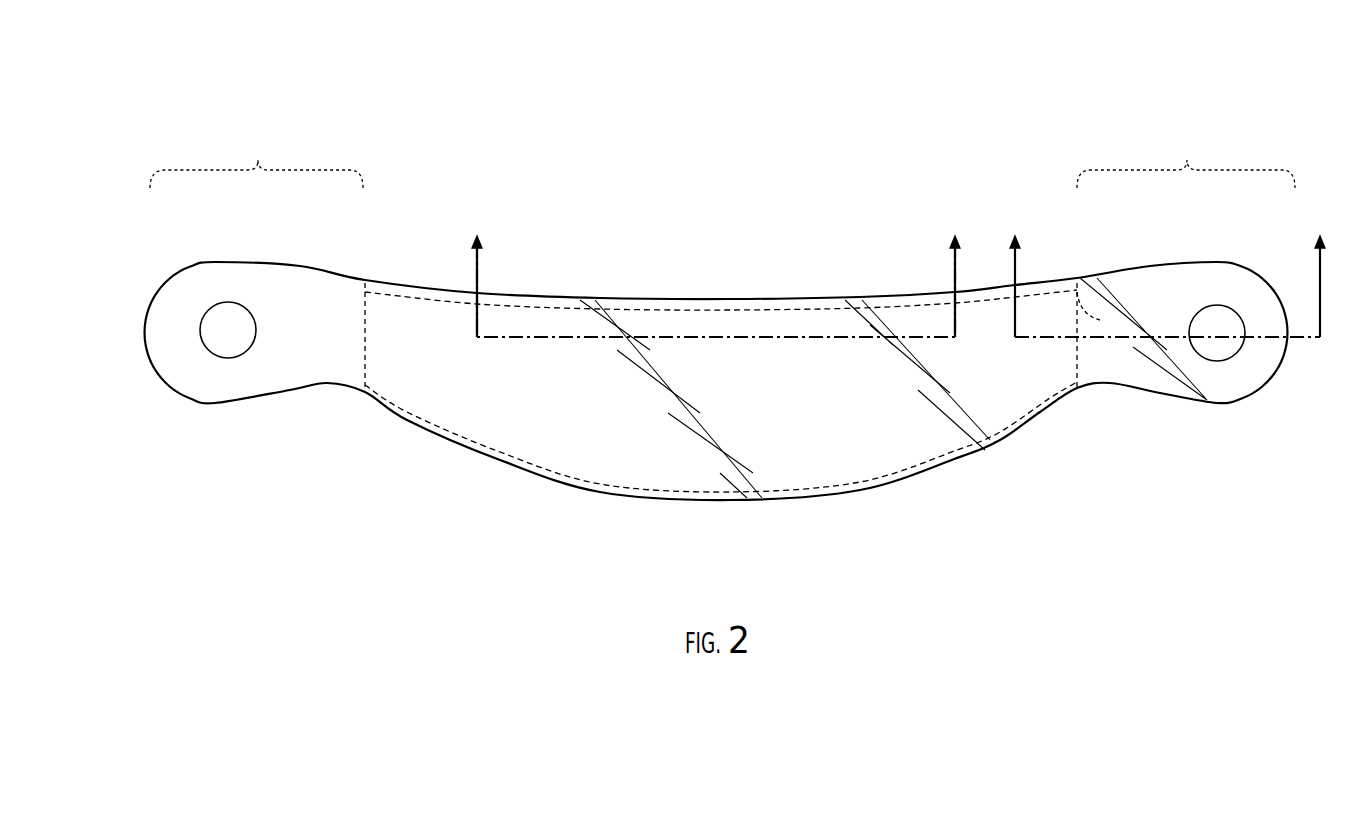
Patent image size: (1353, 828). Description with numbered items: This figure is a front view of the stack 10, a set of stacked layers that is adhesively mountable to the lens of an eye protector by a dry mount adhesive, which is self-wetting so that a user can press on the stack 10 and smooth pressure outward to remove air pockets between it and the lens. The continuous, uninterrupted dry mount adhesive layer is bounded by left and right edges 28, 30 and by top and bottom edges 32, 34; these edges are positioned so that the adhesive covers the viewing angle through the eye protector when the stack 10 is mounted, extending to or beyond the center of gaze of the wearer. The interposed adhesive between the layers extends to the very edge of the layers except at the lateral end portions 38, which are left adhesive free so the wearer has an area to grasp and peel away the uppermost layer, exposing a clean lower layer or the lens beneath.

The stack 10 is at (118, 477).
The left edge 28 is at (363, 322).
The right edge 30 is at (1125, 282).
The top edge 32 is at (685, 308).
The bottom edge 34 is at (710, 500).
The lateral end portions 38 is at (258, 160).